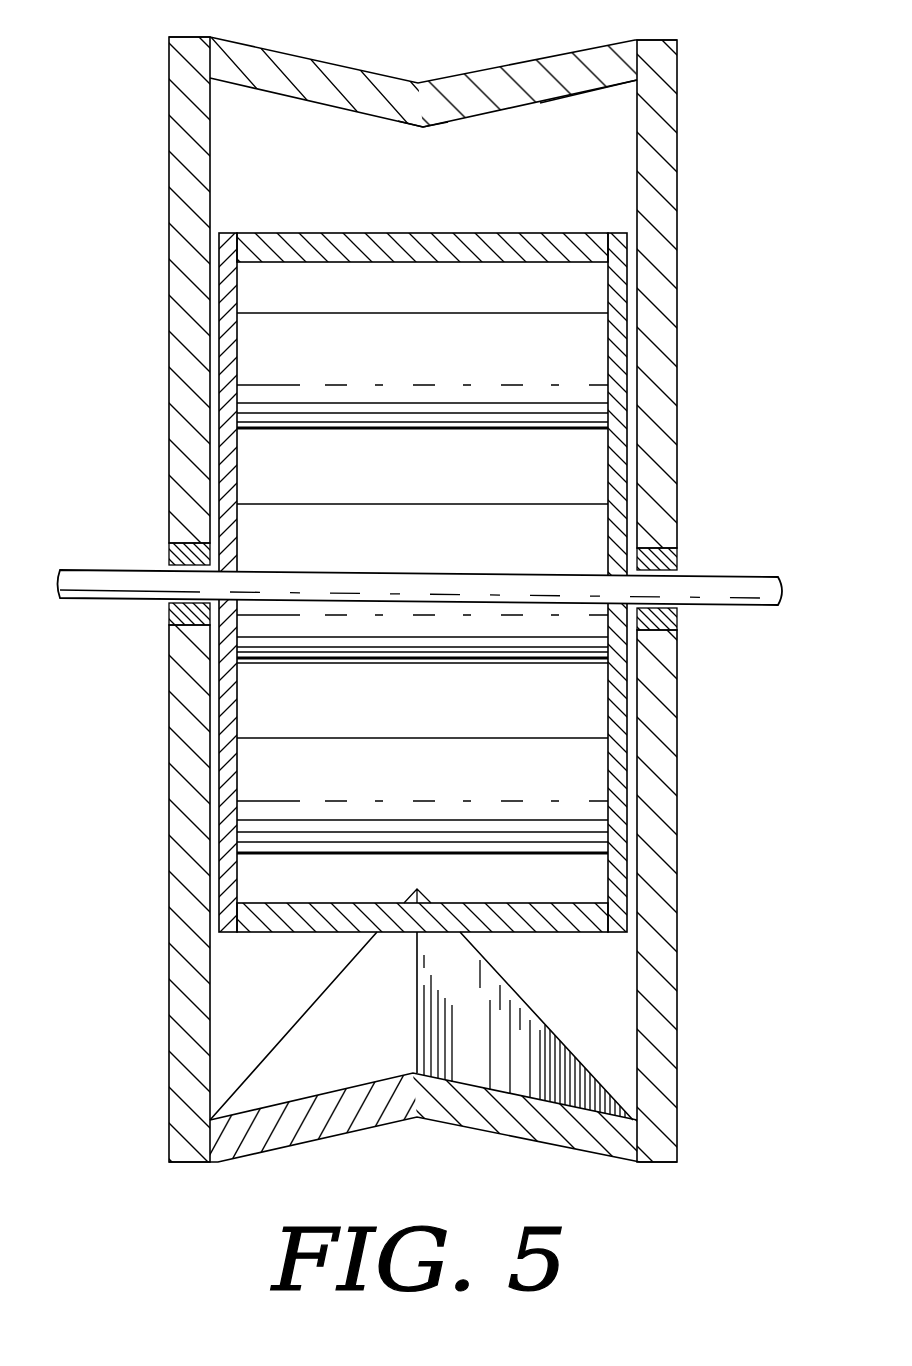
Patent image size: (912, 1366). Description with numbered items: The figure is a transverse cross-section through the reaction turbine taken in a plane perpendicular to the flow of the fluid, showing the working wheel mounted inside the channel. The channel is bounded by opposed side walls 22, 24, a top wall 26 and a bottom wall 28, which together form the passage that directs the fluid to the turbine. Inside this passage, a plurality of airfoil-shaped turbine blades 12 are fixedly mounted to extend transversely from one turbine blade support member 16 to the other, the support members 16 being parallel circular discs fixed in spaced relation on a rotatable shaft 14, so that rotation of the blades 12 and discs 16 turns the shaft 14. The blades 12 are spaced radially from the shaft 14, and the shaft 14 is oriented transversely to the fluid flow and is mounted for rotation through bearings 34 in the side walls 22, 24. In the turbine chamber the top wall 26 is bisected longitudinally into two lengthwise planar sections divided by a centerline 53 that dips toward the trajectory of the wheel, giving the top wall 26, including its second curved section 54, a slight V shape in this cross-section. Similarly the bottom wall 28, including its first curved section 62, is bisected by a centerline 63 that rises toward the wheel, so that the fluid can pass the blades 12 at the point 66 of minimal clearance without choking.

The turbine blades 12 is at (441, 247).
The rotatable shaft 14 is at (749, 583).
The turbine blade support members 16 is at (222, 300).
The side wall 22 is at (658, 995).
The side wall 24 is at (182, 1020).
The top wall 26 is at (498, 88).
The bottom wall 28 is at (545, 1127).
The bearings 34 is at (168, 618).
The centerline 53 is at (426, 130).
The second curved section 54 is at (590, 94).
The first curved section 62 is at (572, 1082).
The centerline 63 is at (420, 1021).
The point of minimal clearance 66 is at (418, 892).